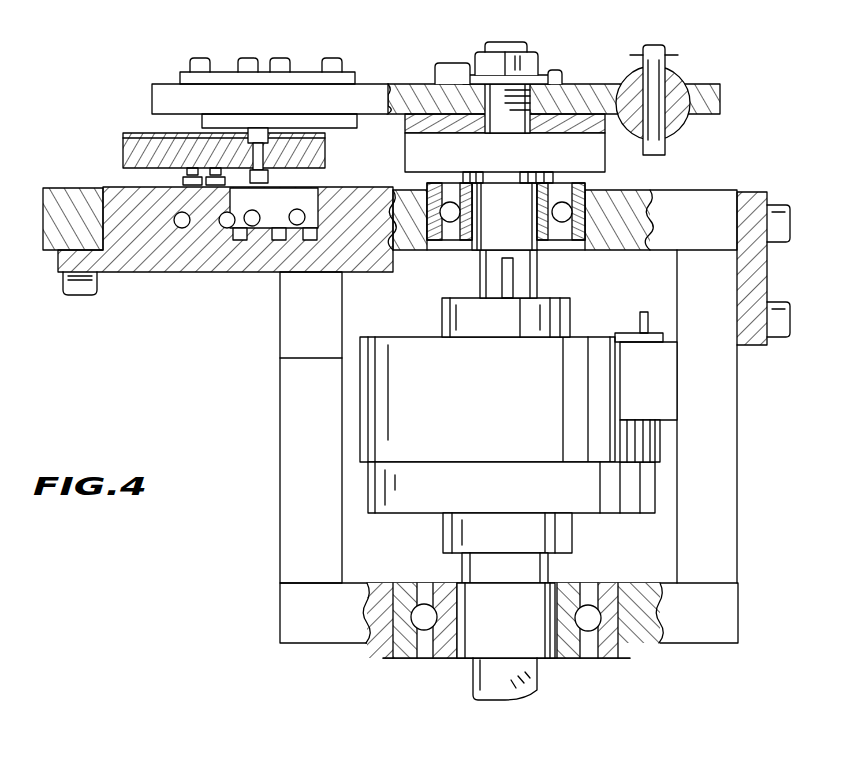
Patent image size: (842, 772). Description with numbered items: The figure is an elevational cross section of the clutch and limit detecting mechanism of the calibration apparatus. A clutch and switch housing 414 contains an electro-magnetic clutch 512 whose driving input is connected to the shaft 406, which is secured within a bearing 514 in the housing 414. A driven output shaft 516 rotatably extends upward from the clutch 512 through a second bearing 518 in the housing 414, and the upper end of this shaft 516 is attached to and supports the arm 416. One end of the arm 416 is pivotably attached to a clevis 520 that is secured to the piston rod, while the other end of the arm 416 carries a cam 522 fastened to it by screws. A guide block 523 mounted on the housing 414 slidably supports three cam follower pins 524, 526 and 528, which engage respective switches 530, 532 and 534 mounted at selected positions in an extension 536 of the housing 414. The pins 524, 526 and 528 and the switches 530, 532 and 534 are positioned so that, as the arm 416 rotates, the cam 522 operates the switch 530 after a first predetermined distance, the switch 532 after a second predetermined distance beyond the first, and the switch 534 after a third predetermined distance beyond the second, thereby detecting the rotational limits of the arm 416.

The shaft 406 is at (530, 675).
The clutch and switch housing 414 is at (292, 432).
The arm 416 is at (403, 97).
The electro-magnetic clutch 512 is at (623, 443).
The bearing 514 is at (608, 647).
The driven output shaft 516 is at (515, 210).
The bearing 518 is at (550, 230).
The clevis 520 is at (672, 75).
The cam 522 is at (250, 122).
The guide block 523 is at (140, 162).
The cam follower pin 524 is at (267, 143).
The cam follower pin 526 is at (193, 130).
The cam follower pin 528 is at (143, 155).
The switch 530 is at (267, 220).
The switch 532 is at (213, 190).
The switch 534 is at (138, 188).
The extension 536 is at (73, 262).